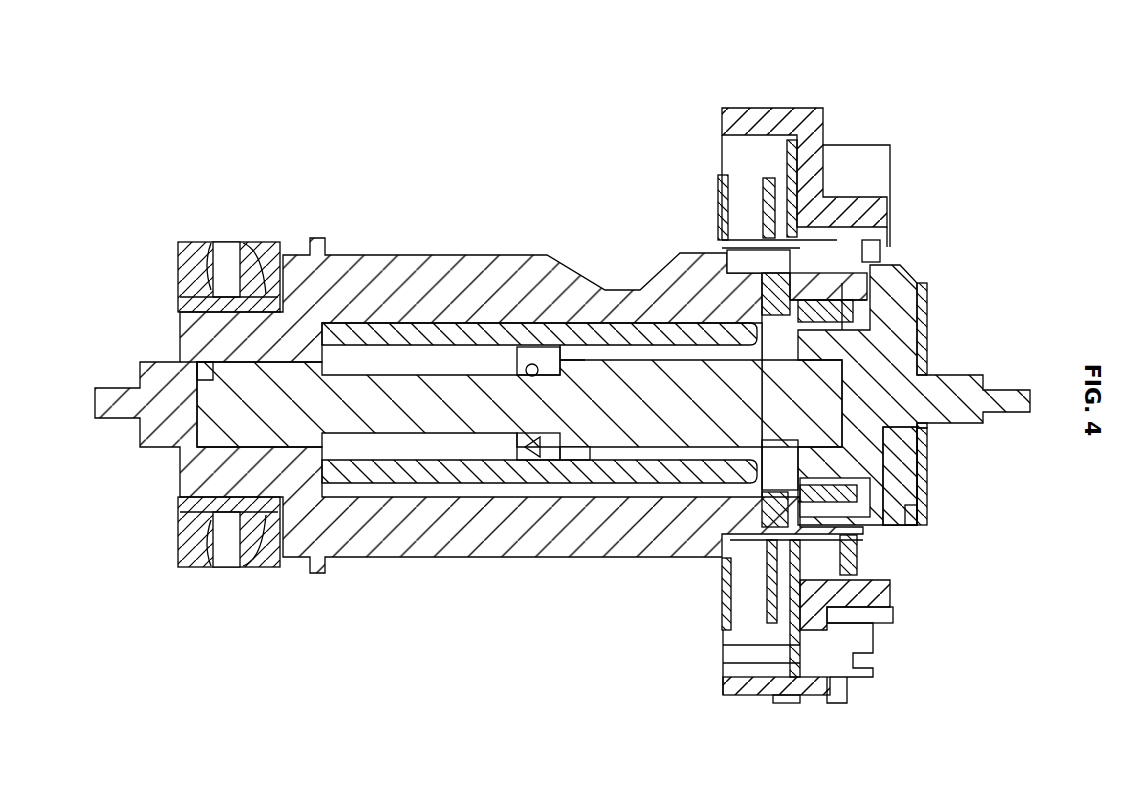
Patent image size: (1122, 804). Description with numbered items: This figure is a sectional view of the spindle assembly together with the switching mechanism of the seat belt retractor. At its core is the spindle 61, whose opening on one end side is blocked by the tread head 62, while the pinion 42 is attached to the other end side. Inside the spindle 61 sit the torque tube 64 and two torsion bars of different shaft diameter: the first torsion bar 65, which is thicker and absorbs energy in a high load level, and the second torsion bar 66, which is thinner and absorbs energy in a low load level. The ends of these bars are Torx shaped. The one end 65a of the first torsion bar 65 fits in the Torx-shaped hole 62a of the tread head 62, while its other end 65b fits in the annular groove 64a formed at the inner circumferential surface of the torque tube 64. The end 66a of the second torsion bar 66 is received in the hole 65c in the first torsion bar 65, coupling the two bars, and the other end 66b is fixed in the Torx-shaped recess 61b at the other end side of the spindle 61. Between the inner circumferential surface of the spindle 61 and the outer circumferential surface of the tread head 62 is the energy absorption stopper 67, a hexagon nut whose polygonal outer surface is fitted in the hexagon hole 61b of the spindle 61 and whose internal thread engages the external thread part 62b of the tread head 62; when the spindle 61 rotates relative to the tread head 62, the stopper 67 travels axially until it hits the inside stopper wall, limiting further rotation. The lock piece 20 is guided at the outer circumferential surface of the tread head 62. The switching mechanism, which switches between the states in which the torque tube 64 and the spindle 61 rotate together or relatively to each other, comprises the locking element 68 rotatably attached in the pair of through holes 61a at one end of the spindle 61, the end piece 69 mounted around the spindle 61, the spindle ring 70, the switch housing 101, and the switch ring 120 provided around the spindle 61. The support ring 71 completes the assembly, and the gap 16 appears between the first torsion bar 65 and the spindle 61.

The pinion 42 is at (232, 246).
The second torsion bar 66 is at (403, 403).
The spindle 61 is at (453, 277).
The hole 65c is at (532, 347).
The annular groove 64a is at (567, 357).
The torque tube 64 is at (605, 290).
The locking element 68 is at (775, 290).
The end piece 69 is at (722, 180).
The spindle ring 70 is at (770, 185).
The switch ring 120 is at (813, 196).
The switch housing 101 is at (858, 198).
The through holes 61a is at (870, 250).
The energy absorption stopper 67 is at (835, 312).
The one end of first torsion bar 65a is at (922, 342).
The tread head 62 is at (870, 358).
The hole 62a is at (925, 428).
The lock piece 20 is at (903, 457).
The external thread part 62b is at (880, 498).
The hexagon hole 61b is at (207, 392).
The other end of second torsion bar 66b is at (207, 442).
The gap 16 is at (470, 492).
The other end of first torsion bar 65b is at (530, 455).
The first torsion bar 65 is at (610, 413).
The end of second torsion bar 66a is at (592, 522).
The support ring 71 is at (883, 598).